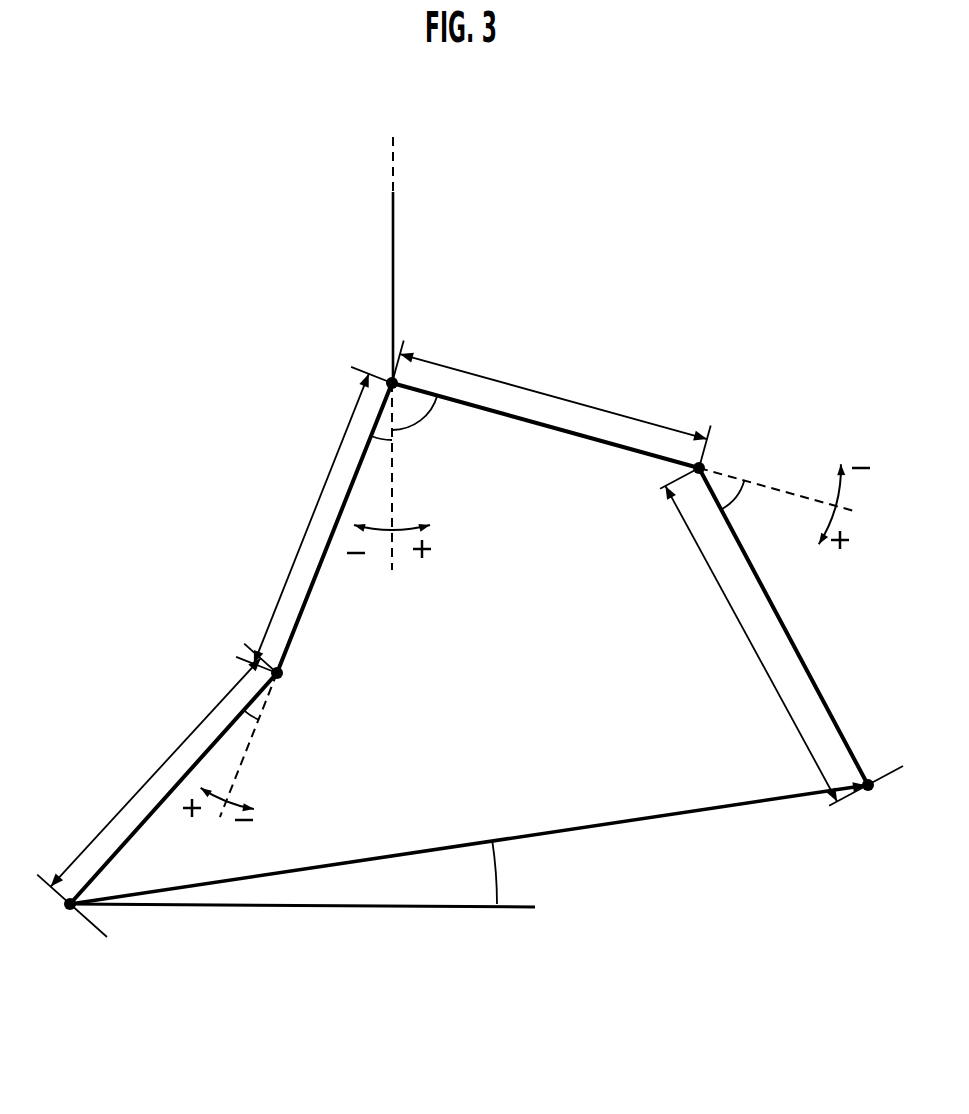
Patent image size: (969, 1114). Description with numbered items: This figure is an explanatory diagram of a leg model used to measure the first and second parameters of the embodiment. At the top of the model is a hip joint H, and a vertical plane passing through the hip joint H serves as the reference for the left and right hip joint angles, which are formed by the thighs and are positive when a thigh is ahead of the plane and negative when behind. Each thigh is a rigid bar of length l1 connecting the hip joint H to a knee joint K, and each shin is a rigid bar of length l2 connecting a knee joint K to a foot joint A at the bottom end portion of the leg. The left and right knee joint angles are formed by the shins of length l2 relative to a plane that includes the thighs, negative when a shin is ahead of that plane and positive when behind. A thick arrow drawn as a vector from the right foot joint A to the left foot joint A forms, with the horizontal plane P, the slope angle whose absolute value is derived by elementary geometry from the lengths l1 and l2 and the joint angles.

The hip joint H is at (392, 383).
The knee joint K is at (699, 468).
The foot joint A is at (70, 904).
The horizontal plane P is at (374, 906).
The thigh length l1 is at (473, 507).
The shin length l2 is at (444, 677).